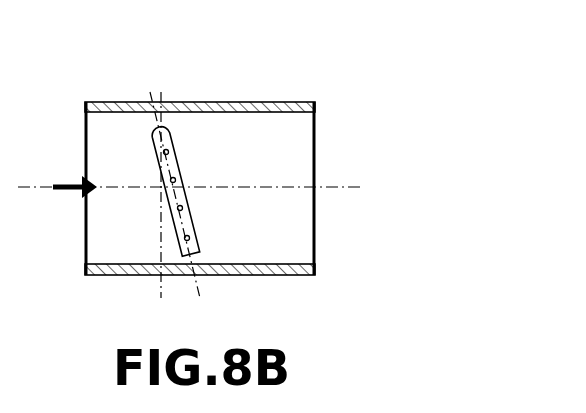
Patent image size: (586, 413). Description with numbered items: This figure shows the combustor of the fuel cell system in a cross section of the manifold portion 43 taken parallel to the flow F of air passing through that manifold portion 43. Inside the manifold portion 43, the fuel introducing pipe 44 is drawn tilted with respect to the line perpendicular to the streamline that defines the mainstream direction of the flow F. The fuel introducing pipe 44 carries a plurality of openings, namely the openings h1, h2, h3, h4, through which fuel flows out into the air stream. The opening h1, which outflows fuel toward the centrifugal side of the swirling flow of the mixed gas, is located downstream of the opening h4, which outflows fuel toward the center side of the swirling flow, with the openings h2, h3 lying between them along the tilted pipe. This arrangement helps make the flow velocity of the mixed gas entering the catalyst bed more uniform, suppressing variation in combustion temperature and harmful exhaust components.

The manifold portion 43 is at (268, 102).
The fuel introducing pipe 44 is at (165, 127).
The opening h4 is at (169, 152).
The opening h3 is at (176, 180).
The opening h2 is at (183, 208).
The opening h1 is at (190, 238).
The flow of air F is at (63, 185).